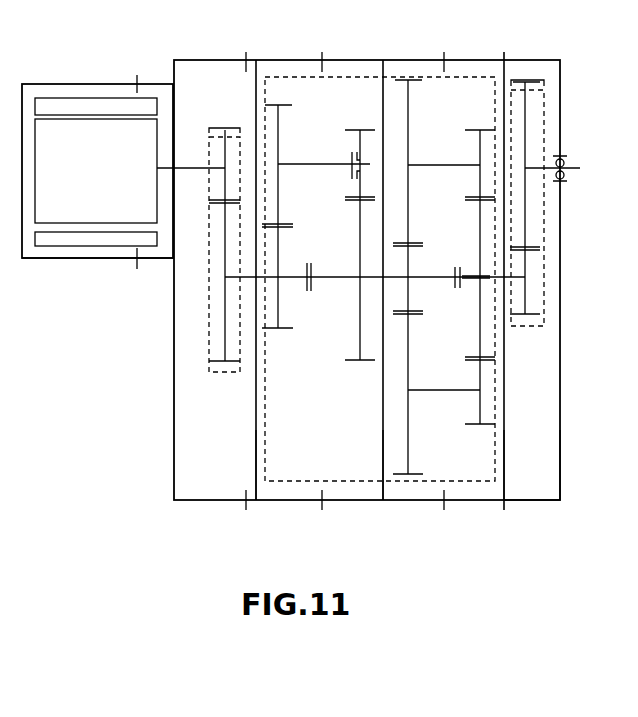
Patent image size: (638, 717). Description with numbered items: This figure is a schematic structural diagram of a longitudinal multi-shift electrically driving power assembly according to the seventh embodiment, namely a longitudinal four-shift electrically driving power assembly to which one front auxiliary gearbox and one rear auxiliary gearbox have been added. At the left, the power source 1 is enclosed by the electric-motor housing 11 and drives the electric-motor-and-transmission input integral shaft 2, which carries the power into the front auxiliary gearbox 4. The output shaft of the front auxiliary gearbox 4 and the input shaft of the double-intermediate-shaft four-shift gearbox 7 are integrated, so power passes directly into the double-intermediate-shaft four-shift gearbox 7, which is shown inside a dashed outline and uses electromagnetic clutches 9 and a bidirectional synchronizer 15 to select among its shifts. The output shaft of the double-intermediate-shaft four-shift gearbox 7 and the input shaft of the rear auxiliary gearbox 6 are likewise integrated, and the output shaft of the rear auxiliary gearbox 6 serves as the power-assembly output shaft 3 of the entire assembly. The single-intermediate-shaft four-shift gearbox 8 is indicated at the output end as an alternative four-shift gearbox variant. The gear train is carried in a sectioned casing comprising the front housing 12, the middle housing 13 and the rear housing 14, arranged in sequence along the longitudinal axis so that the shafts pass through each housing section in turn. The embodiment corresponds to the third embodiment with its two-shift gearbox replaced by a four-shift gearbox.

The power source 1 is at (118, 140).
The electric-motor-and-transmission input integral shaft 2 is at (203, 167).
The power-assembly output shaft 3 is at (581, 137).
The front auxiliary gearbox 4 is at (228, 128).
The rear auxiliary gearbox 6 is at (525, 80).
The double-intermediate-shaft four-shift gearbox 7 is at (360, 76).
The single-intermediate-shaft four-shift gearbox 8 is at (560, 168).
The electromagnetic clutches 9 is at (347, 163).
The electric-motor housing 11 is at (118, 258).
The front housing 12 is at (198, 500).
The middle housing 13 is at (300, 500).
The rear housing 14 is at (543, 500).
The bidirectional synchronizer 15 is at (493, 277).